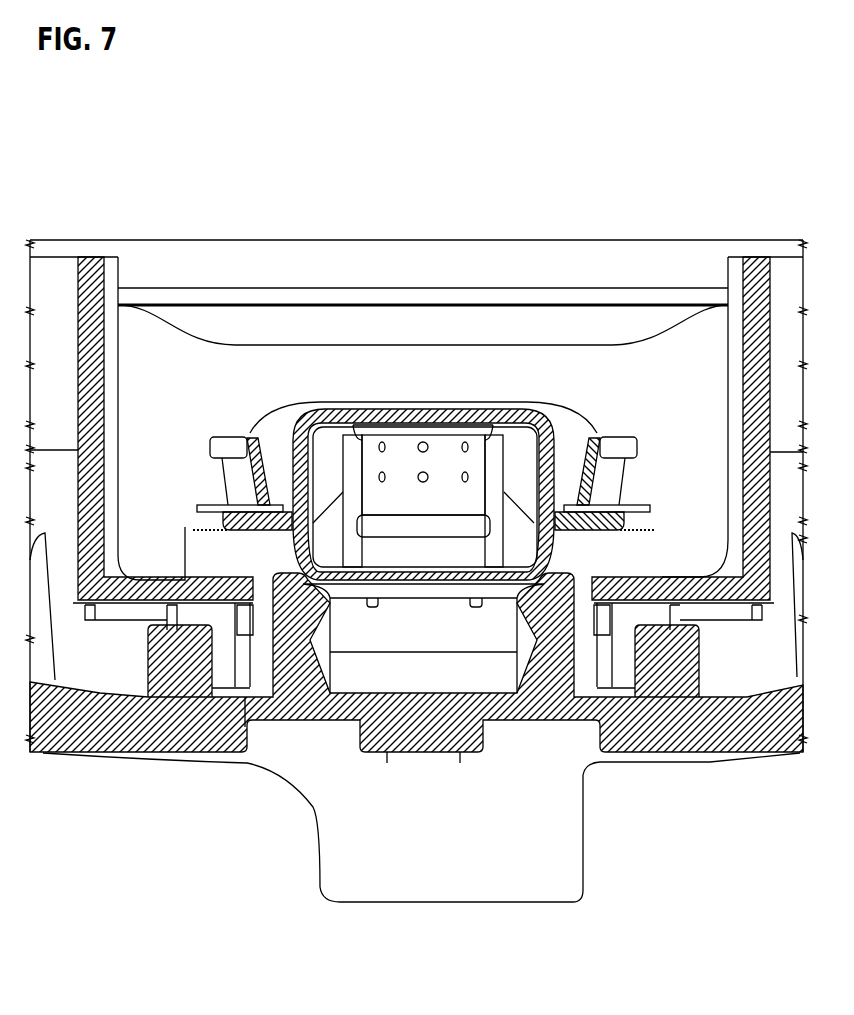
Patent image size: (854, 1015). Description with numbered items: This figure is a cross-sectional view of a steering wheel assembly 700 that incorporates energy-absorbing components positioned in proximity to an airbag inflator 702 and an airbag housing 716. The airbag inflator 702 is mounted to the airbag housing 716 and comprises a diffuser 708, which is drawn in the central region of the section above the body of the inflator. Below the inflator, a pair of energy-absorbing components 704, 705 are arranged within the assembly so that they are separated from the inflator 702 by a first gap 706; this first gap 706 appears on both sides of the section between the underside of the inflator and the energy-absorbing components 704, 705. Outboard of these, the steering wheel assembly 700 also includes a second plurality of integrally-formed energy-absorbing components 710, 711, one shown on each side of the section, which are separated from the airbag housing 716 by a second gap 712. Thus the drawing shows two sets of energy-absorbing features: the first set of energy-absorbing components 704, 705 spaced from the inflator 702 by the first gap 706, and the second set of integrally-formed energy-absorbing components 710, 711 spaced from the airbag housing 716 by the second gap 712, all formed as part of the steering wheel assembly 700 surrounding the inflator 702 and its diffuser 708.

The steering wheel assembly 700 is at (78, 753).
The airbag inflator 702 is at (595, 432).
The energy-absorbing component 704 is at (333, 667).
The energy-absorbing component 705 is at (512, 667).
The first gap 706 is at (512, 607).
The diffuser 708 is at (398, 443).
The integrally-formed energy-absorbing component 710 is at (147, 657).
The integrally-formed energy-absorbing component 711 is at (700, 655).
The second gap 712 is at (700, 627).
The airbag housing 716 is at (118, 402).